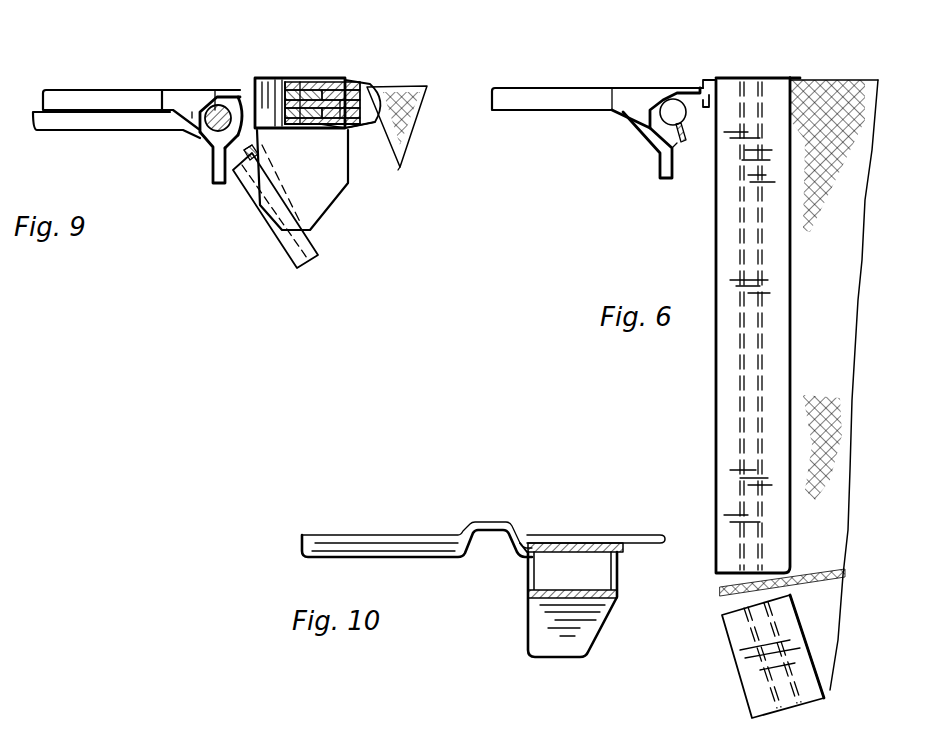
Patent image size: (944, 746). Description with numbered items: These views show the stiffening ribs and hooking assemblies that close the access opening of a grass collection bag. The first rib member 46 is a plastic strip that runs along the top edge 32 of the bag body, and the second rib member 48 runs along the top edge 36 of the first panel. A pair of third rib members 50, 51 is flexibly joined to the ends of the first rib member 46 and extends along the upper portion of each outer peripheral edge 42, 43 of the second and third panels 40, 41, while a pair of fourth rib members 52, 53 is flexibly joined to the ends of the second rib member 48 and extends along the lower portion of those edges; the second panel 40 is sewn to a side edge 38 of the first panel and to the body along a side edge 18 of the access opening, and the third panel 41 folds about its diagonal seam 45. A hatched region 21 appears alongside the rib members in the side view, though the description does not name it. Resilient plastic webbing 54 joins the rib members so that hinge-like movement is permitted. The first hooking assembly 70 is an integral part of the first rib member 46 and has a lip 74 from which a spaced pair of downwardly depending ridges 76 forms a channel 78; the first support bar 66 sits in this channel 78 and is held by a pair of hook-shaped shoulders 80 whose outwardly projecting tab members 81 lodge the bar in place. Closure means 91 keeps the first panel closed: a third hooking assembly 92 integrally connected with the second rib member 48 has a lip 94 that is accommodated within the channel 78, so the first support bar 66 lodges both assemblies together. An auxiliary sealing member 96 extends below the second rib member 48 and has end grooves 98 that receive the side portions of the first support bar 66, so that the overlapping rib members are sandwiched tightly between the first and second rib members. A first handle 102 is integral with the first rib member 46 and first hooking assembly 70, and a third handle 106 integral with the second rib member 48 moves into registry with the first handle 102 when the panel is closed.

In FIG. 9, the side edge of the first access opening 18 is at (422, 87).
In FIG. 6, the insulation 21 is at (838, 208).
In FIG. 9, the top edge 32 is at (340, 80).
In FIG. 9, the top edge of the first panel 36 is at (313, 130).
In FIG. 10, the top edge of the first panel 36 is at (578, 535).
In FIG. 9, the side edge of the first panel 38 is at (387, 167).
In FIG. 9, the second panel 40 is at (397, 132).
In FIG. 6, the third panel 41 is at (823, 355).
In FIG. 9, the outer peripheral edge 42 is at (335, 120).
In FIG. 6, the outer peripheral edge 43 is at (723, 590).
In FIG. 6, the seam 45 is at (830, 567).
In FIG. 9, the first rib member 46 is at (315, 78).
In FIG. 6, the first rib member 46 is at (755, 78).
In FIG. 9, the second rib member 48 is at (322, 130).
In FIG. 10, the second rib member 48 is at (527, 552).
In FIG. 9, the third rib member 50 is at (370, 83).
In FIG. 6, the third rib member 51 is at (777, 278).
In FIG. 9, the fourth rib member 52 is at (360, 128).
In FIG. 6, the fourth rib member 53 is at (753, 678).
In FIG. 9, the resilient plastic webbing 54 is at (270, 82).
In FIG. 6, the resilient plastic webbing 54 is at (783, 77).
In FIG. 9, the first support bar 66 is at (197, 132).
In FIG. 6, the first support bar 66 is at (680, 85).
In FIG. 9, the first hooking assembly 70 is at (198, 64).
In FIG. 6, the first hooking assembly 70 is at (620, 80).
In FIG. 9, the lip 74 is at (215, 88).
In FIG. 6, the lip 74 is at (647, 88).
In FIG. 9, the ridges 76 is at (192, 117).
In FIG. 6, the ridges 76 is at (640, 118).
In FIG. 9, the channel 78 is at (302, 123).
In FIG. 6, the channel 78 is at (700, 118).
In FIG. 9, the hook-shaped shoulders 80 is at (217, 190).
In FIG. 6, the hook-shaped shoulders 80 is at (660, 157).
In FIG. 9, the tab members 81 is at (207, 155).
In FIG. 6, the tab members 81 is at (677, 143).
In FIG. 9, the closure means 91 is at (133, 77).
In FIG. 9, the third hooking assembly 92 is at (170, 157).
In FIG. 10, the third hooking assembly 92 is at (477, 500).
In FIG. 9, the lip 94 is at (235, 92).
In FIG. 10, the lip 94 is at (495, 520).
In FIG. 9, the auxiliary sealing member 96 is at (307, 210).
In FIG. 10, the auxiliary sealing member 96 is at (617, 588).
In FIG. 9, the end grooves 98 is at (262, 220).
In FIG. 9, the first handle 102 is at (55, 97).
In FIG. 6, the first handle 102 is at (523, 97).
In FIG. 9, the third handle 106 is at (57, 118).
In FIG. 10, the third handle 106 is at (315, 555).